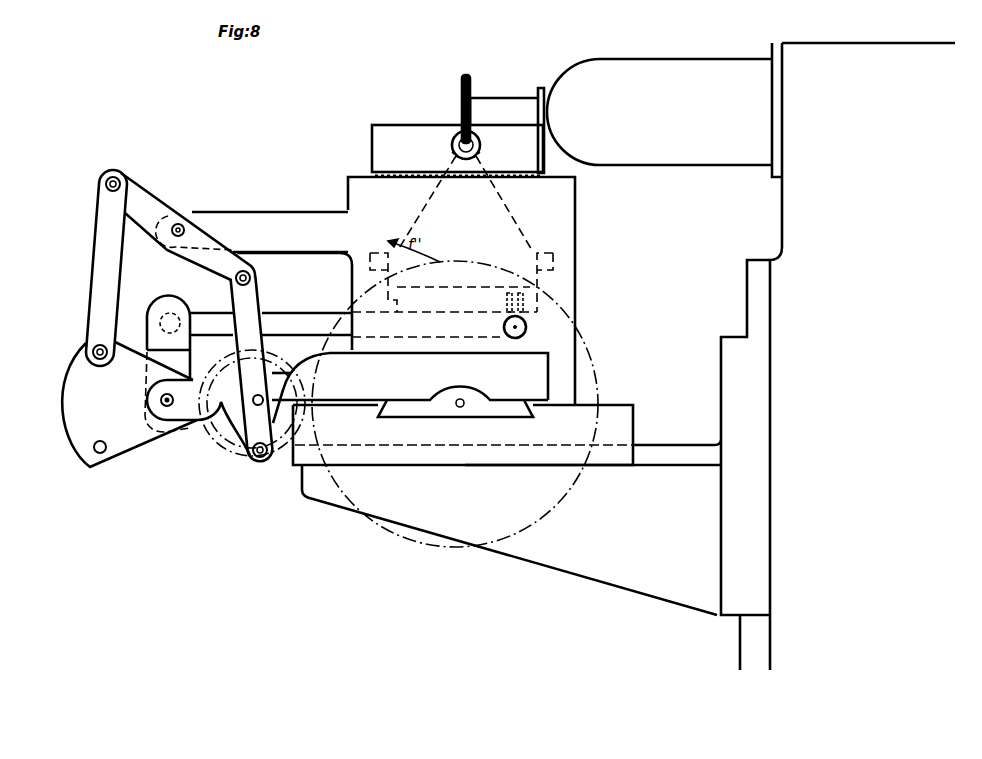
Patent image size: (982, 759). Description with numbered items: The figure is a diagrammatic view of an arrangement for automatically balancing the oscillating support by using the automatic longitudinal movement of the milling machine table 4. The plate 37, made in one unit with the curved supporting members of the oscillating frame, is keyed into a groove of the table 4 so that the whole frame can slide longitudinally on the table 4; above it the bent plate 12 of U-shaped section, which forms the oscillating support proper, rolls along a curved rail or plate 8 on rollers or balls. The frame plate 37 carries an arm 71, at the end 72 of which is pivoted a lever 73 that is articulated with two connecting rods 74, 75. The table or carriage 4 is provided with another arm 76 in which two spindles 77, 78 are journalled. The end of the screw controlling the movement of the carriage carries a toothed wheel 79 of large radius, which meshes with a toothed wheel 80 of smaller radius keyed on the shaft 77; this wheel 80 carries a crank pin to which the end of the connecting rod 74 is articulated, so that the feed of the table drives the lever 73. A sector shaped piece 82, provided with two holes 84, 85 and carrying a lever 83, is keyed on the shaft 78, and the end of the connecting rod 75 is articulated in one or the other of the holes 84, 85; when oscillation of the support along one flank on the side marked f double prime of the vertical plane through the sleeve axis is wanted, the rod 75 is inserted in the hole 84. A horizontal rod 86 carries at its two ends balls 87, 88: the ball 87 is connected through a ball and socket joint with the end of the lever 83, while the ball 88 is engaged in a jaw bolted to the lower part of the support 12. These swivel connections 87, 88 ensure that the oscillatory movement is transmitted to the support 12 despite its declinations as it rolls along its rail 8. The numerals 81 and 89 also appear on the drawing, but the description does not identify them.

The table 4 is at (563, 368).
The curved rail or plate 8 is at (398, 140).
The bent plate 12 is at (412, 212).
The plate 37 is at (561, 212).
The arm 71 is at (297, 222).
The end of arm 72 is at (181, 227).
The lever 73 is at (145, 200).
The connecting rod 74 is at (252, 295).
The connecting rod 75 is at (107, 217).
The arm 76 is at (220, 392).
The spindle 77 is at (263, 400).
The spindle 78 is at (172, 400).
The toothed wheel 79 is at (588, 337).
The toothed wheel 80 is at (228, 448).
The pin 81 is at (259, 458).
The sector shaped piece 82 is at (78, 395).
The lever 83 is at (153, 317).
The hole 84 is at (93, 352).
The hole 85 is at (95, 450).
The horizontal rod 86 is at (310, 320).
The ball 87 is at (168, 314).
The ball 88 is at (517, 327).
The stop 89 is at (506, 300).